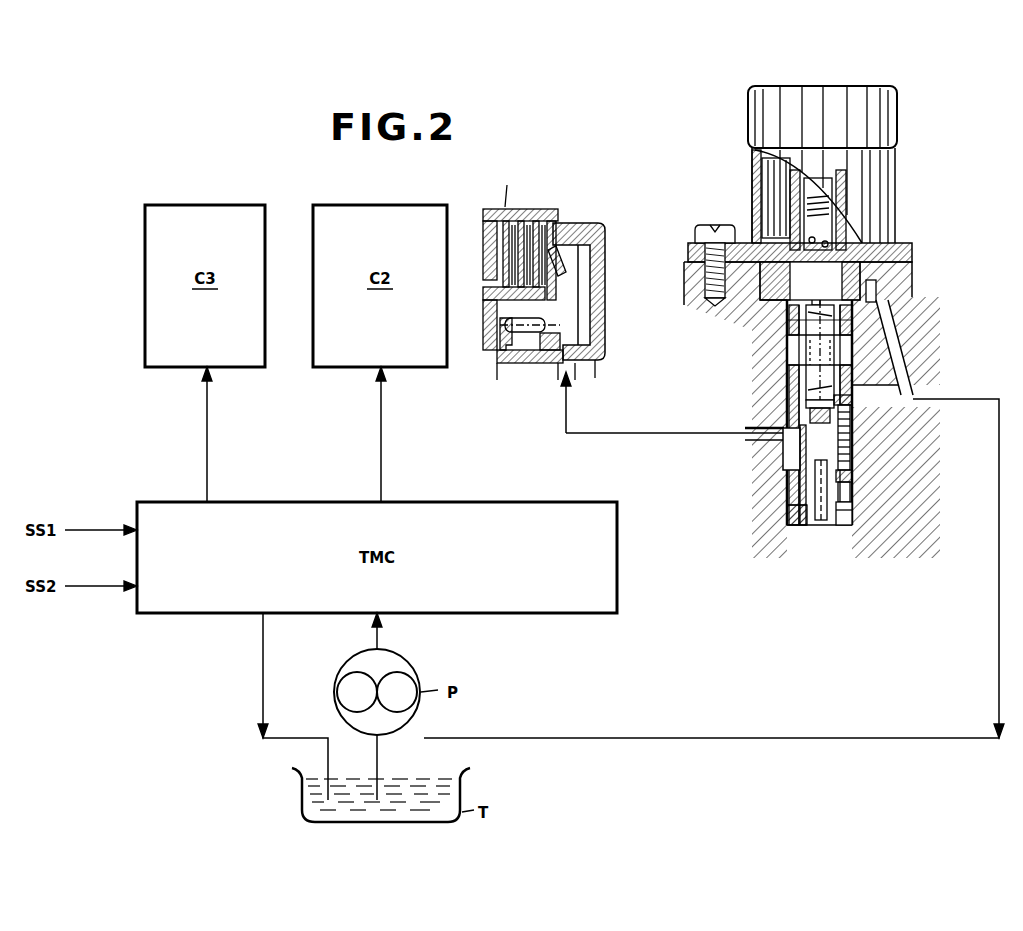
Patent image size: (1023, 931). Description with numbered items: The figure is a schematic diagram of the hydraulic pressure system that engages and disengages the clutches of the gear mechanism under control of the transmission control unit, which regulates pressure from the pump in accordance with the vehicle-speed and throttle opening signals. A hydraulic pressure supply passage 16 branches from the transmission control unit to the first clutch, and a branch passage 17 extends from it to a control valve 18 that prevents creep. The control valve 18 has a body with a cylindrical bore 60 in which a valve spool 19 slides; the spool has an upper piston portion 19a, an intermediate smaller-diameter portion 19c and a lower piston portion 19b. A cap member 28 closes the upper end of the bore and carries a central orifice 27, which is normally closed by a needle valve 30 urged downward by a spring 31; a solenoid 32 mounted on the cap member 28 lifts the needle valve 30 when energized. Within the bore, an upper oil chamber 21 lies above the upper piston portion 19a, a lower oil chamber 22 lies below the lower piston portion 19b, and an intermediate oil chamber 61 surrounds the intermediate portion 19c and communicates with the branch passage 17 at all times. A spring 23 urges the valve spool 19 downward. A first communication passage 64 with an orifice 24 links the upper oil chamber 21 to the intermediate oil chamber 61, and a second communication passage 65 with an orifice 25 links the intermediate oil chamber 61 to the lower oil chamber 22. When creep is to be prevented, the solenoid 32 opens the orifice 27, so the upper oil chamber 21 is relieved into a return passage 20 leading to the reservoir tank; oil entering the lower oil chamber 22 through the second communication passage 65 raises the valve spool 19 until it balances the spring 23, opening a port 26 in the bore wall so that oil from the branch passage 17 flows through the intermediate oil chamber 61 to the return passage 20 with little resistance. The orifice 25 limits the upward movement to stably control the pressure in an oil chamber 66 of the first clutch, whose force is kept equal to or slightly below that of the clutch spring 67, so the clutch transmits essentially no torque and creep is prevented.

The hydraulic pressure supply passage 16 is at (563, 412).
The branch passage 17 is at (652, 432).
The control valve 18 is at (945, 299).
The valve spool 19 is at (872, 465).
The upper piston portion 19a is at (775, 376).
The lower piston portion 19b is at (785, 505).
The intermediate smaller-diameter portion 19c is at (800, 457).
The return passage 20 is at (915, 392).
The upper oil chamber 21 is at (852, 357).
The lower oil chamber 22 is at (850, 512).
The spring 23 is at (835, 340).
The orifice 24 is at (790, 436).
The orifice 25 is at (800, 480).
The port 26 is at (855, 396).
The central orifice 27 is at (760, 322).
The cap member 28 is at (873, 262).
The needle valve 30 is at (880, 276).
The spring 31 is at (830, 190).
The solenoid 32 is at (748, 182).
The cylindrical bore 60 is at (787, 347).
The intermediate oil chamber 61 is at (848, 440).
The first communication passage 64 is at (795, 413).
The second communication passage 65 is at (821, 512).
The oil chamber 66 is at (582, 293).
The spring 67 is at (528, 332).